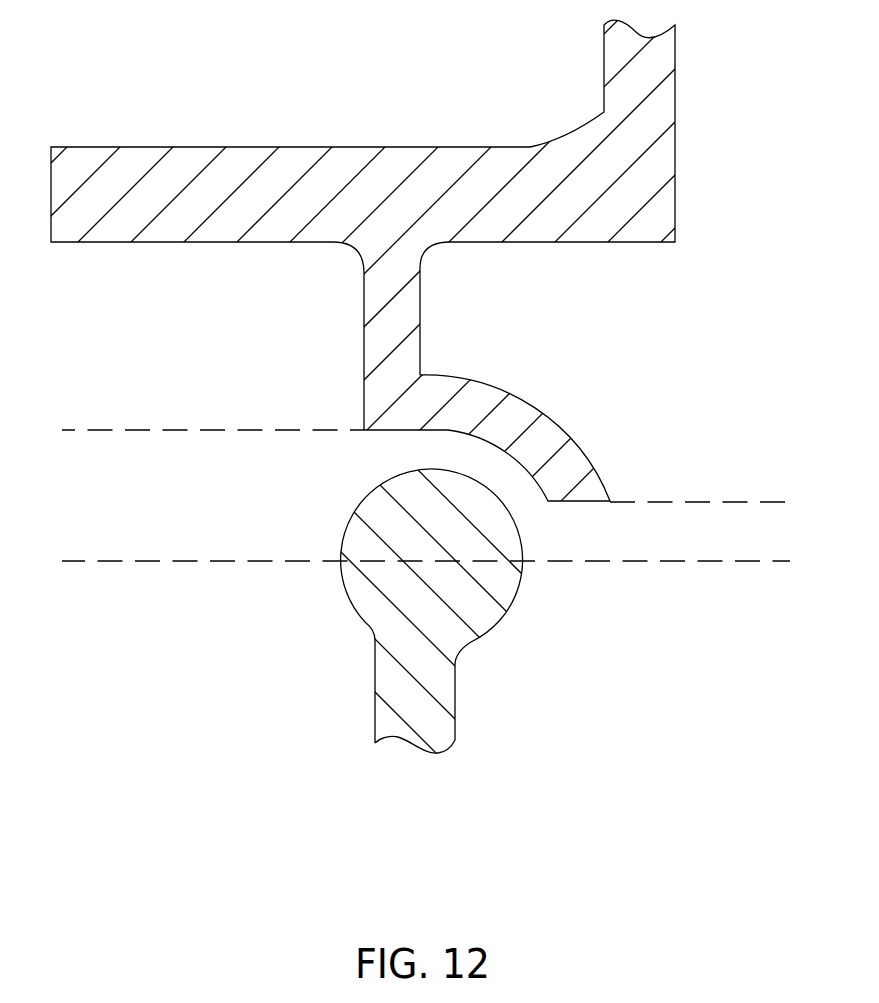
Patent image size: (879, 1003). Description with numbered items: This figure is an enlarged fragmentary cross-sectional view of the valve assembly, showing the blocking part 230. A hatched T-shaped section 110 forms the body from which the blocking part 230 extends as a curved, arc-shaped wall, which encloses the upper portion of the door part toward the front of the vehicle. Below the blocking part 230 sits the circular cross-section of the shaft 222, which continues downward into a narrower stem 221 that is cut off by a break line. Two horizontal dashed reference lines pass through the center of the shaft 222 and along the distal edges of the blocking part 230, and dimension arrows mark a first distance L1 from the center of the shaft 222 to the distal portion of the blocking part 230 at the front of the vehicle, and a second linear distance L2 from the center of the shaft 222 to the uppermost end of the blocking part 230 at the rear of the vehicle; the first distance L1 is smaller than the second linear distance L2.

The body 110 is at (647, 158).
The blocking part 230 is at (543, 442).
The shaft 222 is at (507, 582).
The neck portion 221 is at (437, 728).
The first distance L1 is at (681, 503).
The second linear distance L2 is at (210, 432).